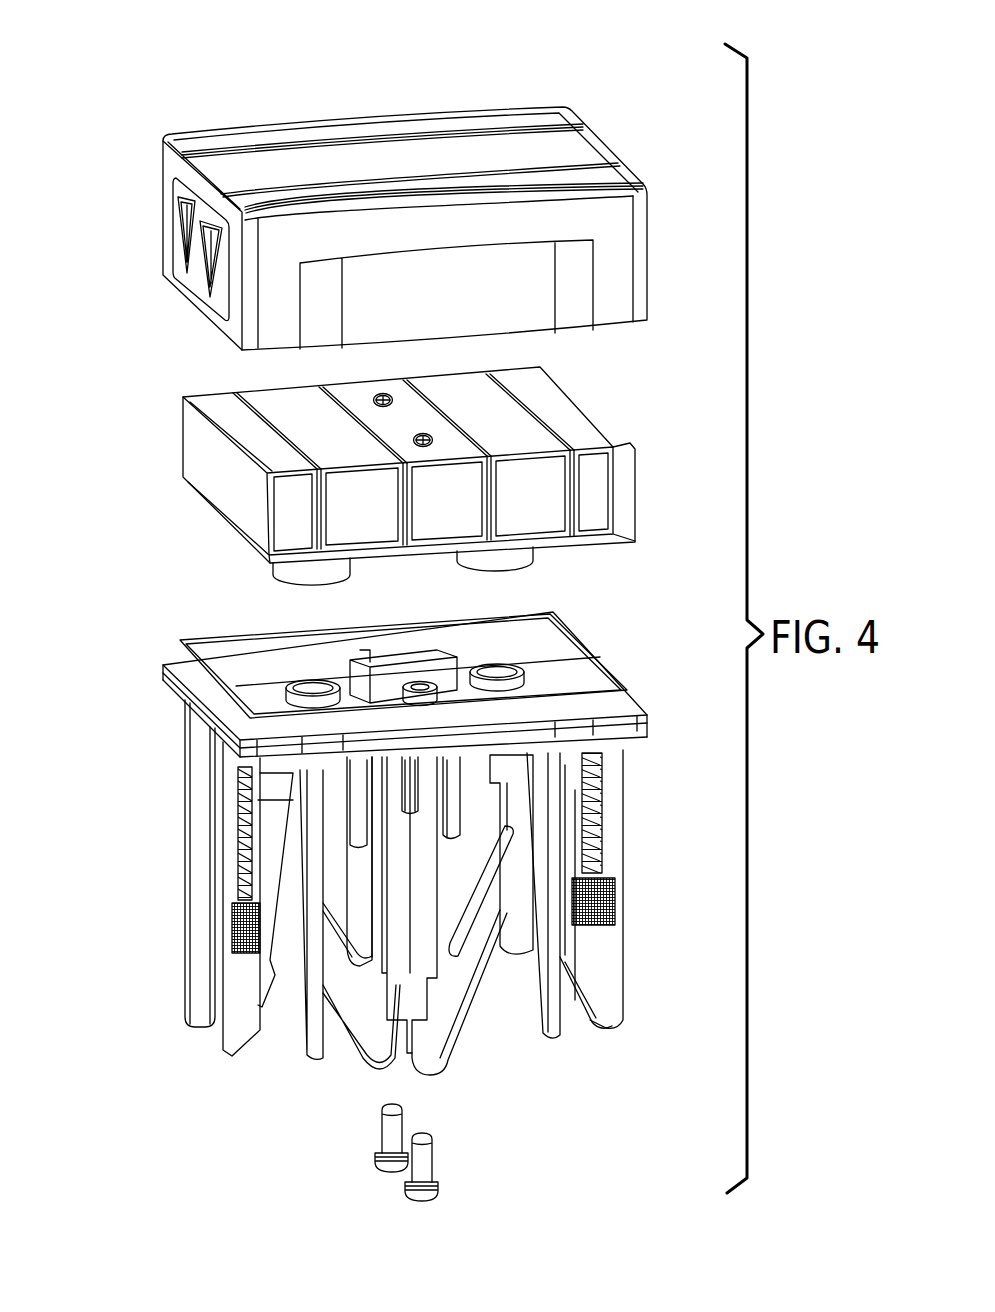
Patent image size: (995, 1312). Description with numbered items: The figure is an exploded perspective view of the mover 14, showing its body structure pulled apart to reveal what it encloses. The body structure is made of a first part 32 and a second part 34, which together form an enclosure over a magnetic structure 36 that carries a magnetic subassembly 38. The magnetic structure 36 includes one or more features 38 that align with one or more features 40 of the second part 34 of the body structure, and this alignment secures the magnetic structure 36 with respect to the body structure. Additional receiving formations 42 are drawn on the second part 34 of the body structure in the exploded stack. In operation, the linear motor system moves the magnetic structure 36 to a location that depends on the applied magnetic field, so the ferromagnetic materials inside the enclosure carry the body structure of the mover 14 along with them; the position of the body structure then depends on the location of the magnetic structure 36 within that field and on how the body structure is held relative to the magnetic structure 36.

The mover 14 is at (118, 56).
The first part 32 is at (162, 208).
The second part 34 is at (175, 698).
The magnetic structure 36 is at (197, 493).
The magnetic subassembly 38 is at (258, 388).
The features of the second part 40 is at (493, 578).
The receiving bosses 42 is at (313, 680).